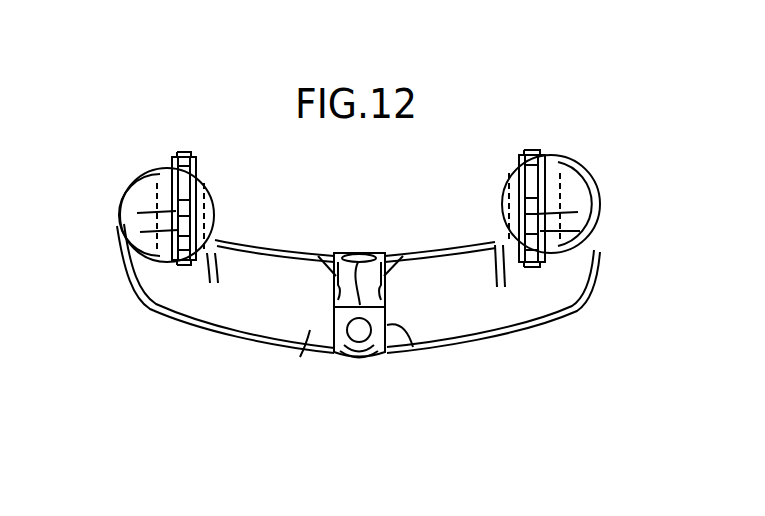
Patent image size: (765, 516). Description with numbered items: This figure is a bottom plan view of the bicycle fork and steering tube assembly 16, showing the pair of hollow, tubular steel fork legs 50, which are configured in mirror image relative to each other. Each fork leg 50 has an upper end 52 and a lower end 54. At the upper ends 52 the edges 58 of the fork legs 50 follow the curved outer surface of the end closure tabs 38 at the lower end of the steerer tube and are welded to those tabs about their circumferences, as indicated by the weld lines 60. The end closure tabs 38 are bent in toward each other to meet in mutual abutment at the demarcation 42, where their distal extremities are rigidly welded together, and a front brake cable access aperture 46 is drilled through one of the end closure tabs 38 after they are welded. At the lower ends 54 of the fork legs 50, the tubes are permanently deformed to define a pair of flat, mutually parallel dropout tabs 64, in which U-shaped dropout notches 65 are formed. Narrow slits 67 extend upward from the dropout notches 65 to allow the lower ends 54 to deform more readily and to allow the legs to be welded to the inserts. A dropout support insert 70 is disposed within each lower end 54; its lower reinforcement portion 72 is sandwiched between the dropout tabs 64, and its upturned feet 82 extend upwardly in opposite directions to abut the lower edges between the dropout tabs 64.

The bicycle fork and steering tube assembly 16 is at (464, 470).
The end closure tab 38 is at (345, 253).
The demarcation 42 is at (360, 253).
The front brake cable access aperture 46 is at (366, 343).
The fork leg 50 is at (197, 358).
The upper end 52 is at (312, 339).
The lower end 54 is at (147, 203).
The edges 58 is at (311, 251).
The weld lines 60 is at (410, 313).
The dropout tab 64 is at (147, 203).
The dropout notch 65 is at (212, 185).
The slit 67 is at (137, 187).
The dropout support insert 70 is at (191, 133).
The lower reinforcement portion 72 is at (152, 268).
The upturned feet 82 is at (173, 157).